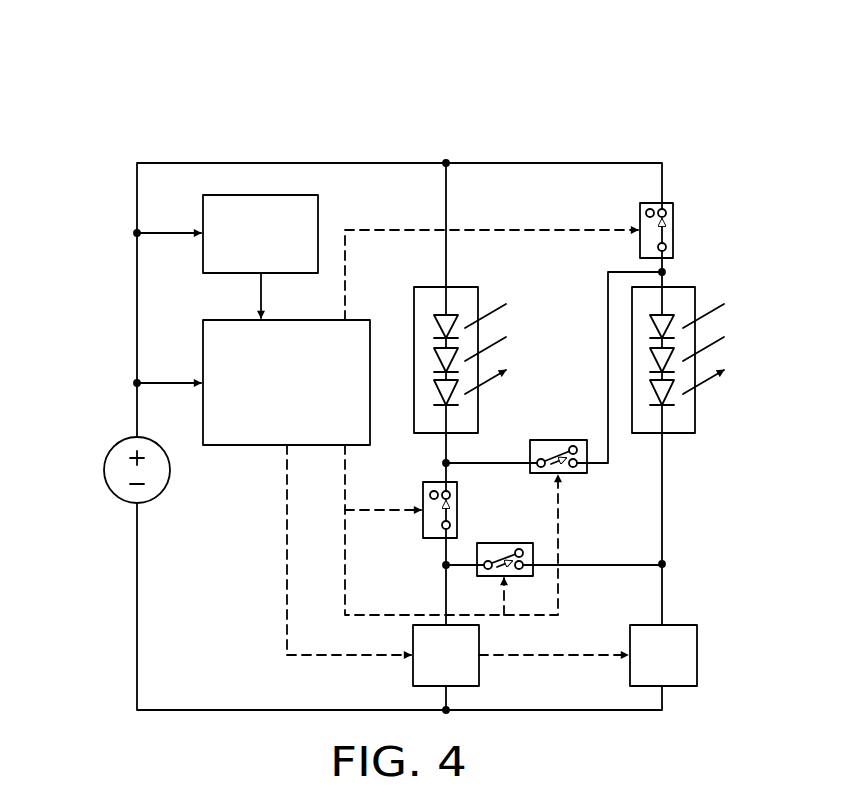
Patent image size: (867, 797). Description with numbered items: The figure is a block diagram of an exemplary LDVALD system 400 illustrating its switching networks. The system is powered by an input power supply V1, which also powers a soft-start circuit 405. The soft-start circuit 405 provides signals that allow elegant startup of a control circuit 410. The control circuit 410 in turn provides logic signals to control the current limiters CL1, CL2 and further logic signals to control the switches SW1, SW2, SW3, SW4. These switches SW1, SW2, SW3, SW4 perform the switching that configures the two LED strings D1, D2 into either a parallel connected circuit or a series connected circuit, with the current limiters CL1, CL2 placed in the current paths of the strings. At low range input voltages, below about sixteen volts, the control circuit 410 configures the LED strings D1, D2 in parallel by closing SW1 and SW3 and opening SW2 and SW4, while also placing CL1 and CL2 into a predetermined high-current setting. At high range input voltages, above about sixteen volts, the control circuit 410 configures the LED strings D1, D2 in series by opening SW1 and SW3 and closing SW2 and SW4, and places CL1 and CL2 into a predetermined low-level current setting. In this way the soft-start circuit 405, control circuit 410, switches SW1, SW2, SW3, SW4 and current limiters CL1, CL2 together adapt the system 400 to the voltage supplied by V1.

The LDVALD system 400 is at (168, 96).
The soft-start circuit 405 is at (260, 195).
The control circuit 410 is at (252, 445).
The input power supply V1 is at (114, 497).
The switch SW1 is at (640, 222).
The switch SW2 is at (545, 440).
The switch SW3 is at (423, 495).
The switch SW4 is at (505, 543).
The LED string D1 is at (478, 296).
The LED string D2 is at (676, 287).
The current limiter CL1 is at (413, 668).
The current limiter CL2 is at (677, 625).